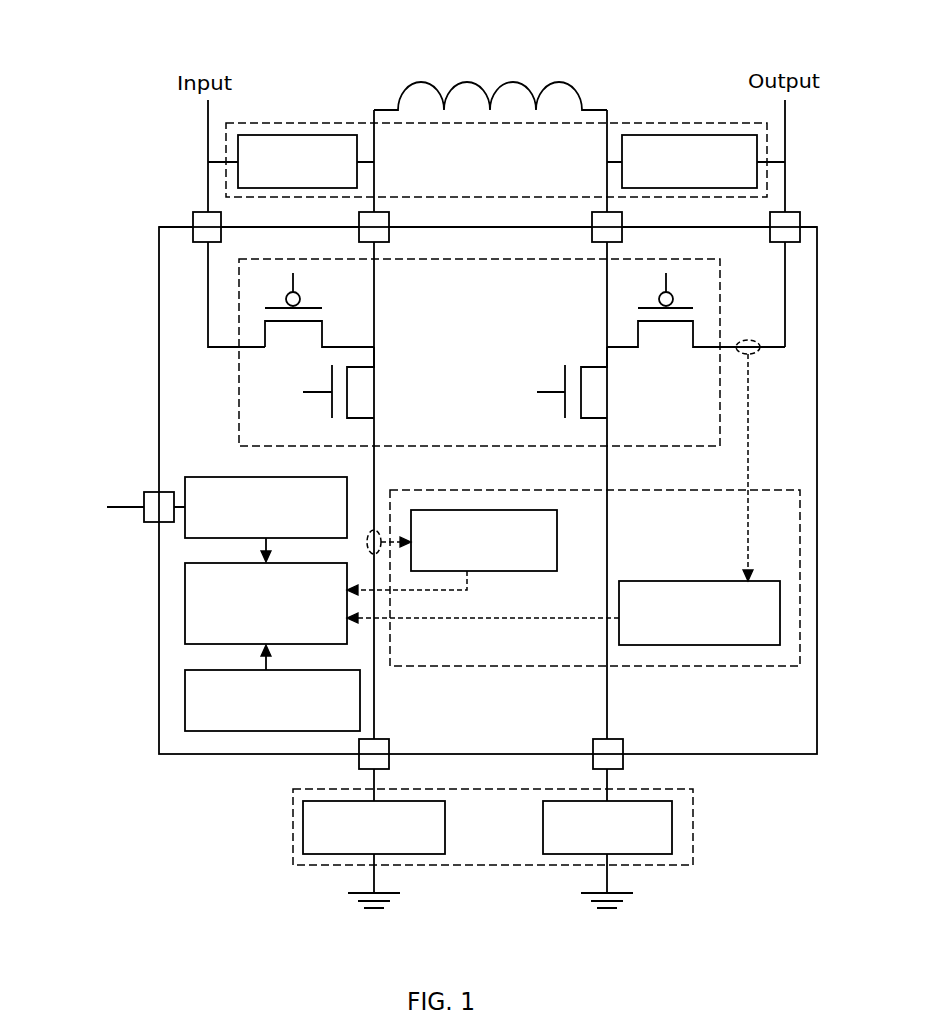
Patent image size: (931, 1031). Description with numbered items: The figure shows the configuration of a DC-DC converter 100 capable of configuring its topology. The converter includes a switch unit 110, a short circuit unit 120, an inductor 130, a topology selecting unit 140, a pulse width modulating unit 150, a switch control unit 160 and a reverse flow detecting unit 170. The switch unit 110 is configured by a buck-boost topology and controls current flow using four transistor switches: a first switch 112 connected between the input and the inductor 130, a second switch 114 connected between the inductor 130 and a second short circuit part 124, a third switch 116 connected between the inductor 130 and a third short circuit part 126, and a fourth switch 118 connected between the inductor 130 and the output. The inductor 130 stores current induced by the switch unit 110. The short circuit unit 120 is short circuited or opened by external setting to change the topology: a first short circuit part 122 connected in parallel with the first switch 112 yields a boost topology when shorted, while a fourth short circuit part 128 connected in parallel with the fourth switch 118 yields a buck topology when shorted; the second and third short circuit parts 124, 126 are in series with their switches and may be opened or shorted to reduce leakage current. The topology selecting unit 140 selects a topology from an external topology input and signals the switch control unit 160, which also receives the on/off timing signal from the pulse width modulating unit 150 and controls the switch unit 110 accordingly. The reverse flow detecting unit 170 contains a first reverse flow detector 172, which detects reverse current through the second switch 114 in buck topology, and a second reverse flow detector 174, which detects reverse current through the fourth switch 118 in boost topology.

The DC-DC converter 100 is at (220, 19).
The switch unit 110 is at (472, 260).
The first switch 112 is at (285, 355).
The second switch 114 is at (378, 393).
The third switch 116 is at (573, 347).
The fourth switch 118 is at (667, 355).
The short circuit unit 120 is at (636, 122).
The first short circuit part 122 is at (301, 133).
The second short circuit part 124 is at (333, 855).
The third short circuit part 126 is at (655, 855).
The fourth short circuit part 128 is at (690, 134).
The inductor 130 is at (467, 78).
The topology selecting unit 140 is at (185, 525).
The pulse width modulating unit 150 is at (185, 700).
The switch control unit 160 is at (185, 610).
The reverse flow detecting unit 170 is at (497, 666).
The first reverse flow detector 172 is at (557, 540).
The second reverse flow detector 174 is at (707, 645).